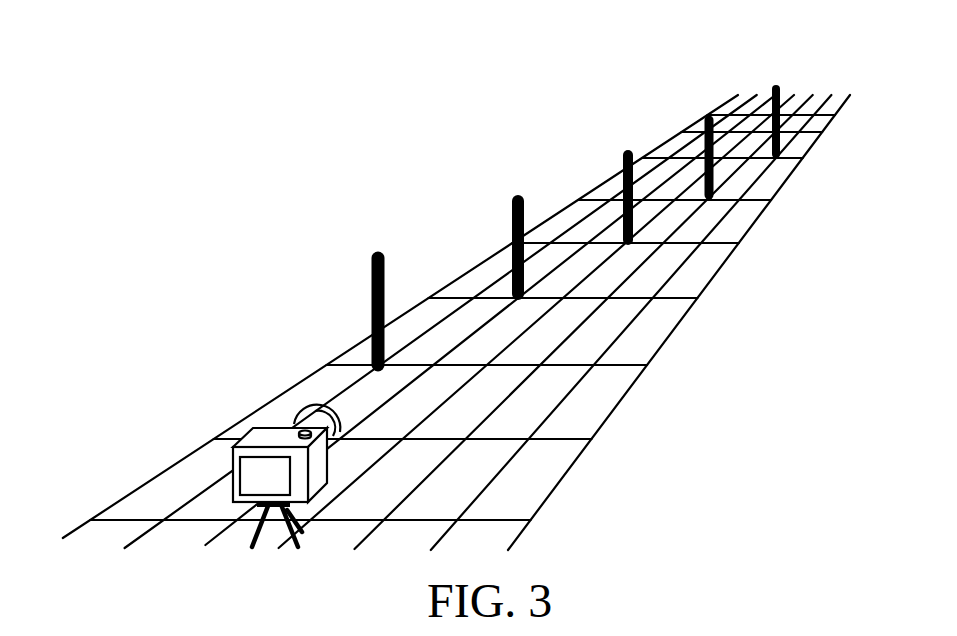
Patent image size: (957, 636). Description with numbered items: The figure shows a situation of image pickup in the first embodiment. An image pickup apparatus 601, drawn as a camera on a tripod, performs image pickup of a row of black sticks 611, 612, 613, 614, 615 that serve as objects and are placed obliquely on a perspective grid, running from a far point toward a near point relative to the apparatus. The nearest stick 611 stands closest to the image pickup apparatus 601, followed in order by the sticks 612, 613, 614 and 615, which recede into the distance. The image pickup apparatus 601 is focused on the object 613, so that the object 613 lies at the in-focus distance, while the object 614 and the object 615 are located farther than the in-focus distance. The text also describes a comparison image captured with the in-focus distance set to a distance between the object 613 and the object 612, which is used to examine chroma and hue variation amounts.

The image pickup apparatus 601 is at (267, 435).
The black stick 611 is at (373, 253).
The black stick 612 is at (513, 198).
The black stick 613 is at (627, 153).
The black stick 614 is at (708, 117).
The black stick 615 is at (777, 87).